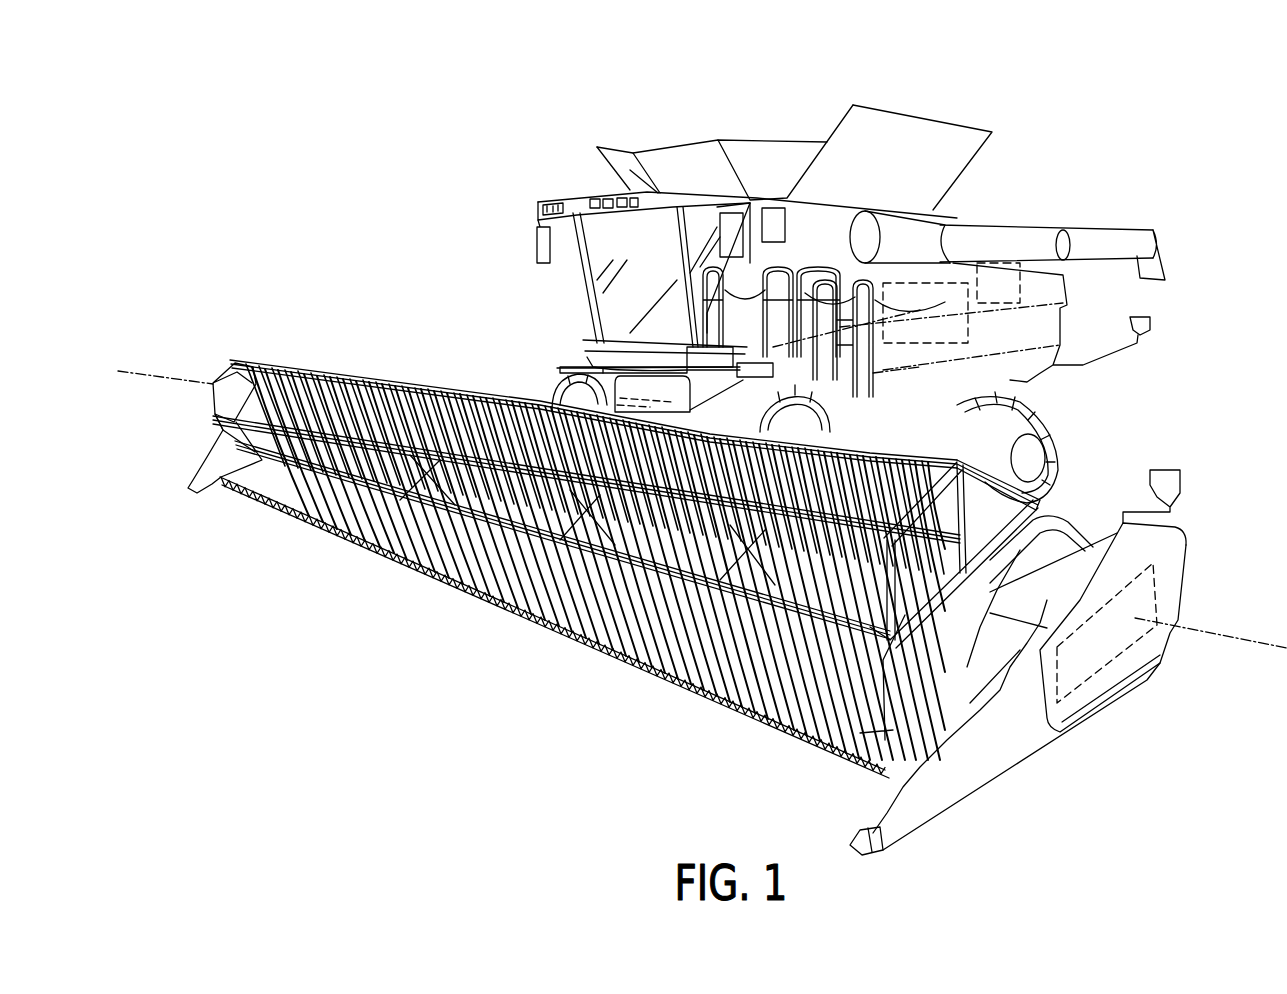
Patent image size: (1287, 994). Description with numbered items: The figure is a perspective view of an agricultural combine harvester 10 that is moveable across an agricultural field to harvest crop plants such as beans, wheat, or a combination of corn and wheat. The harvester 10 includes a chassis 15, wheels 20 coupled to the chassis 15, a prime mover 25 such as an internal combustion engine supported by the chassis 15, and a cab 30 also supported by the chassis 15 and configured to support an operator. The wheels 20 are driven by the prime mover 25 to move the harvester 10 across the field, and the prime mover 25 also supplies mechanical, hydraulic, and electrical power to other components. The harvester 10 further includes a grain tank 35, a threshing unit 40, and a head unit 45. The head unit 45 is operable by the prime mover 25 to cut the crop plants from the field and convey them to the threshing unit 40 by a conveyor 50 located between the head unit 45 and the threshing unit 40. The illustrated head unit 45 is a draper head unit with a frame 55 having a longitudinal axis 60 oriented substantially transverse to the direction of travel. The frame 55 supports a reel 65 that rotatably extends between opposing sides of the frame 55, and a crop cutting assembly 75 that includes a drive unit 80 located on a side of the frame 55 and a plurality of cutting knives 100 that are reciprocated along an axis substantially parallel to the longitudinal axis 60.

The agricultural combine harvester 10 is at (368, 80).
The chassis 15 is at (1052, 315).
The wheels 20 is at (1052, 441).
The prime mover 25 is at (997, 265).
The cab 30 is at (578, 199).
The grain tank 35 is at (787, 140).
The threshing unit 40 is at (953, 272).
The head unit 45 is at (218, 345).
The conveyor 50 is at (560, 383).
The frame 55 is at (1172, 549).
The longitudinal axis 60 is at (1203, 652).
The reel 65 is at (560, 413).
The crop cutting assembly 75 is at (1000, 822).
The drive unit 80 is at (1160, 591).
The cutting knives 100 is at (487, 600).